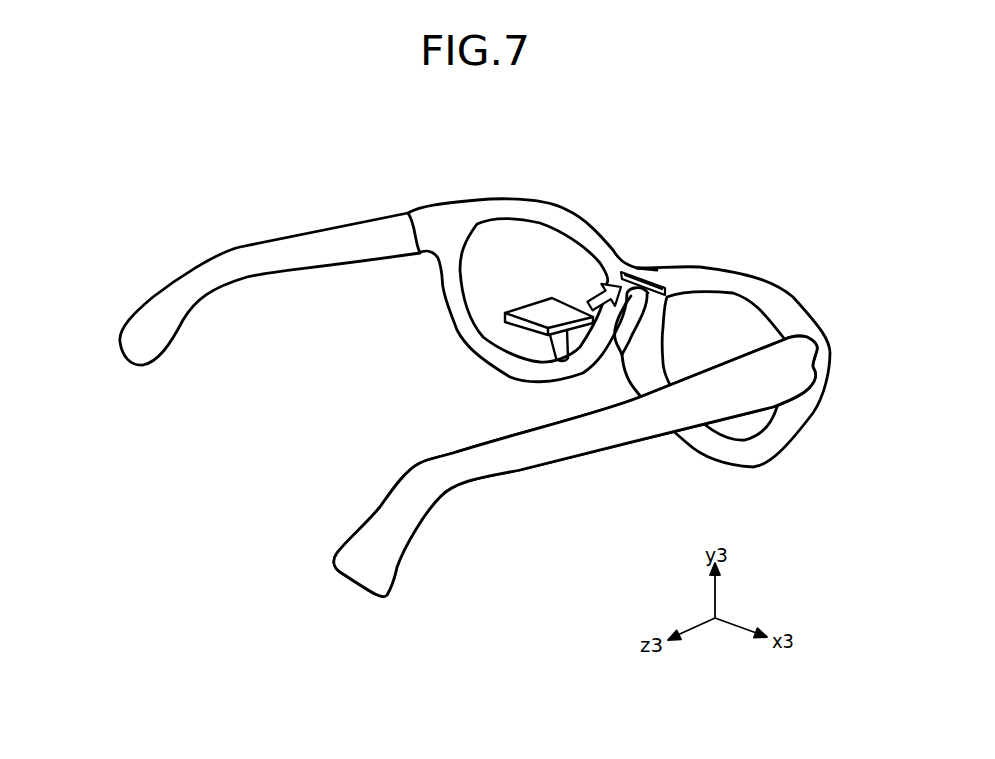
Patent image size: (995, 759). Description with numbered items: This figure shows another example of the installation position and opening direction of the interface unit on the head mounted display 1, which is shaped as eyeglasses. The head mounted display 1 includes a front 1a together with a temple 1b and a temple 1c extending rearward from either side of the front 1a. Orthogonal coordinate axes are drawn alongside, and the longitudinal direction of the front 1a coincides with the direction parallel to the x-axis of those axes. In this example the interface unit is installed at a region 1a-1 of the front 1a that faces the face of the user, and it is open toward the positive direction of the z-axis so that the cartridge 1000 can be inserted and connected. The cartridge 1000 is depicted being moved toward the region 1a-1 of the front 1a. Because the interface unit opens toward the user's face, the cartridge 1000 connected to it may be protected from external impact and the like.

The head mounted display 1 is at (238, 452).
The front 1a is at (547, 213).
The region of the front 1a-1 is at (637, 268).
The temple 1b is at (520, 462).
The temple 1c is at (250, 255).
The cartridge 1000 is at (533, 312).